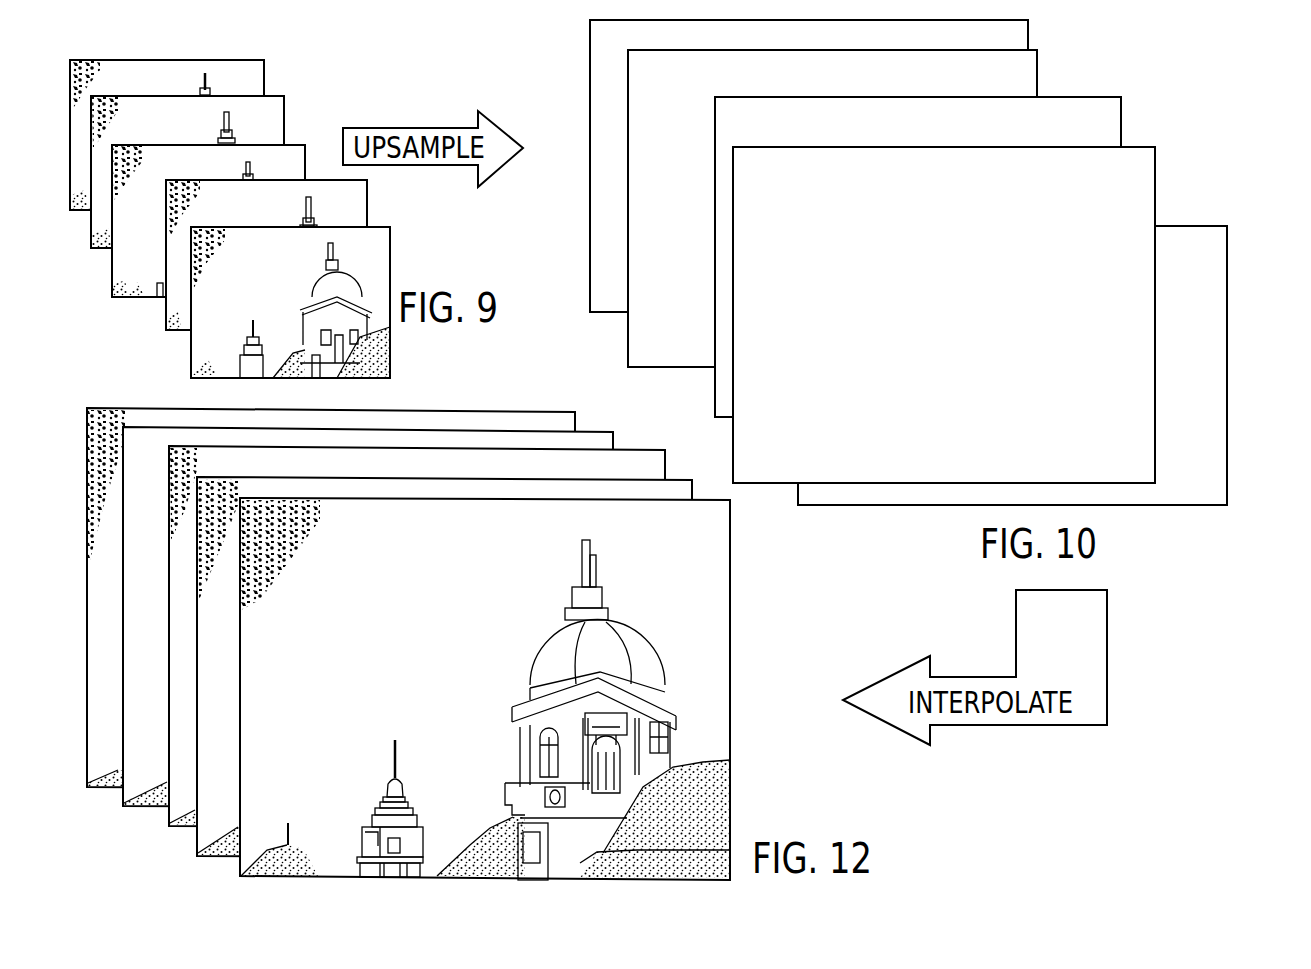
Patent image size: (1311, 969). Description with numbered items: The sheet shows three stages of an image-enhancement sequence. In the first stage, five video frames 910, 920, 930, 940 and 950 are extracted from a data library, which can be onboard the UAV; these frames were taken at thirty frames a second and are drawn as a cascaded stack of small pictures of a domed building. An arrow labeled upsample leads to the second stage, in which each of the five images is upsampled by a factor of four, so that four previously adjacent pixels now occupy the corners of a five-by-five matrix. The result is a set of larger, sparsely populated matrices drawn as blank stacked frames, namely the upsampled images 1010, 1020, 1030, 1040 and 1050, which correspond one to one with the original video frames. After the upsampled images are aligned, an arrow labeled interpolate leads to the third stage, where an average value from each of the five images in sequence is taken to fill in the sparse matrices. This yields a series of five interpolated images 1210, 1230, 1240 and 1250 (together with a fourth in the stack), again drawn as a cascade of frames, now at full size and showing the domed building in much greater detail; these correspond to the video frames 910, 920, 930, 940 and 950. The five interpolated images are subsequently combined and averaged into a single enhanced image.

In FIG. 9, the video frame 910 is at (264, 66).
In FIG. 9, the video frame 920 is at (284, 100).
In FIG. 9, the video frame 930 is at (305, 152).
In FIG. 9, the video frame 940 is at (367, 190).
In FIG. 9, the video frame 950 is at (390, 237).
In FIG. 10, the upsampled image 1010 is at (1022, 39).
In FIG. 10, the upsampled image 1020 is at (1030, 81).
In FIG. 12, the upsampled image 1020 is at (600, 437).
In FIG. 10, the upsampled image 1030 is at (1117, 127).
In FIG. 10, the upsampled image 1040 is at (1152, 192).
In FIG. 10, the upsampled image 1050 is at (1205, 254).
In FIG. 12, the interpolated image 1210 is at (503, 417).
In FIG. 12, the interpolated image 1230 is at (647, 460).
In FIG. 12, the interpolated image 1240 is at (678, 490).
In FIG. 12, the interpolated image 1250 is at (728, 546).